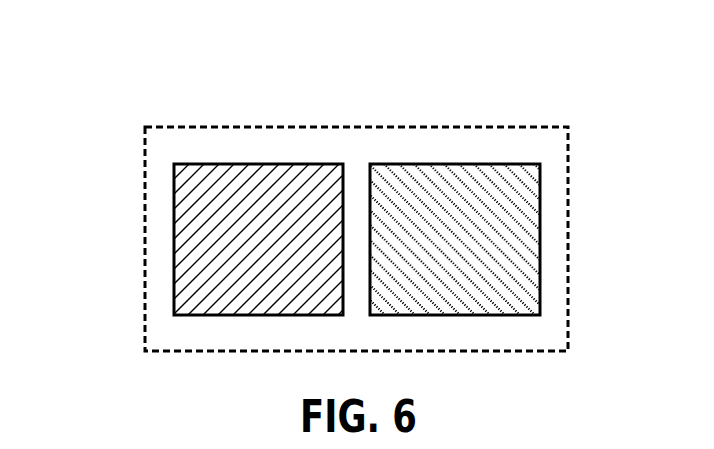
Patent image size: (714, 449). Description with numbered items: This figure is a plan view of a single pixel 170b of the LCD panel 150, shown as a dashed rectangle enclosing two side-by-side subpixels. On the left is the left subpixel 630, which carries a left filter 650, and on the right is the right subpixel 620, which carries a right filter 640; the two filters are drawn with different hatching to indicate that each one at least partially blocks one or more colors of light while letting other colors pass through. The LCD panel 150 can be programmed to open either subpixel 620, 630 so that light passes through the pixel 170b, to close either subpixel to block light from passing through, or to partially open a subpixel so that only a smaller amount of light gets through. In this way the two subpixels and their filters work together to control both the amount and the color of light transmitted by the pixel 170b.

The LCD panel 150 is at (83, 83).
The pixel 170b is at (355, 127).
The left subpixel 630 is at (256, 166).
The right subpixel 620 is at (452, 167).
The left filter 650 is at (188, 218).
The right filter 640 is at (452, 239).